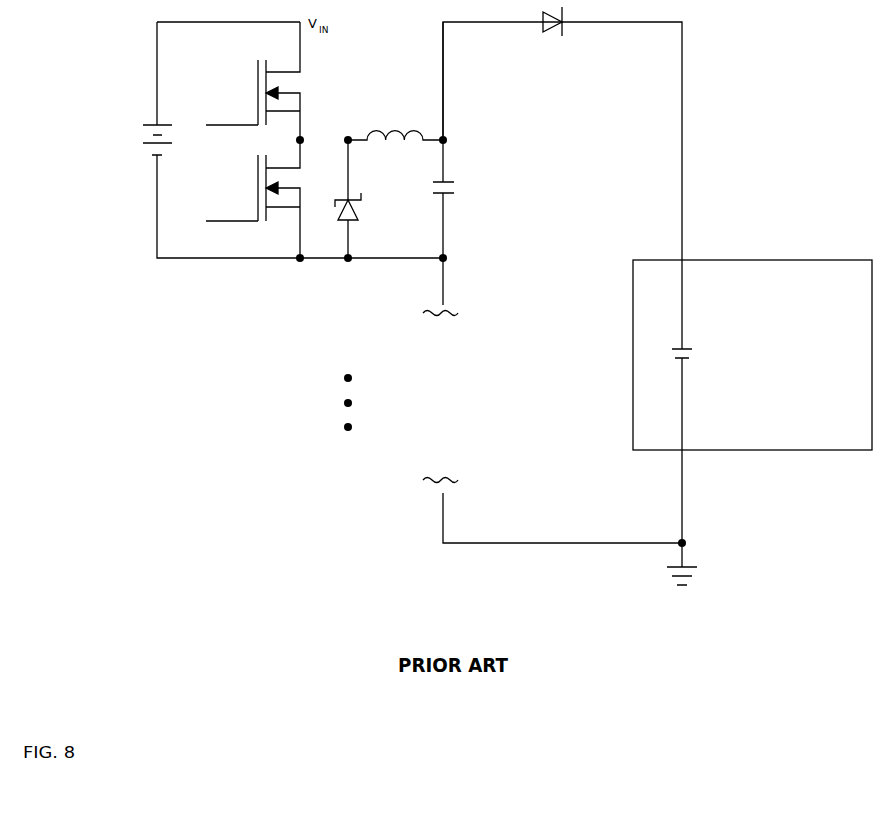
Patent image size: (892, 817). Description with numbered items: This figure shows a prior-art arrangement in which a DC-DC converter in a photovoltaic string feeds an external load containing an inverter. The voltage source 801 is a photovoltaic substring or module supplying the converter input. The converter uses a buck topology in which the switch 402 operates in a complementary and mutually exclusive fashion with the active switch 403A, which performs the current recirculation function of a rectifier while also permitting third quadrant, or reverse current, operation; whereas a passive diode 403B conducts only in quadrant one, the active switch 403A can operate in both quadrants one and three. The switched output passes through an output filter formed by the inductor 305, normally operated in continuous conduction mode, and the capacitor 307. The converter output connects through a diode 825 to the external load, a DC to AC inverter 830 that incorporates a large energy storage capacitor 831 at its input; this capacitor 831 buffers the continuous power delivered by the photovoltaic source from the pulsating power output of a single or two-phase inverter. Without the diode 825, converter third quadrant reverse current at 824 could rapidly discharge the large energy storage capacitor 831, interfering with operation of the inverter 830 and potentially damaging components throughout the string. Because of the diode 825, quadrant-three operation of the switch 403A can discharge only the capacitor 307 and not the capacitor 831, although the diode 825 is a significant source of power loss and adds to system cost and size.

The voltage source 801 is at (144, 146).
The switch 402 is at (253, 81).
The active switch 403A is at (253, 199).
The passive diode 403B is at (359, 199).
The inductor 305 is at (395, 127).
The capacitor 307 is at (451, 199).
The third quadrant (reverse) current 824 is at (443, 92).
The diode 825 is at (547, 30).
The DC to AC inverter 830 is at (752, 355).
The large energy storage capacitor 831 is at (693, 343).